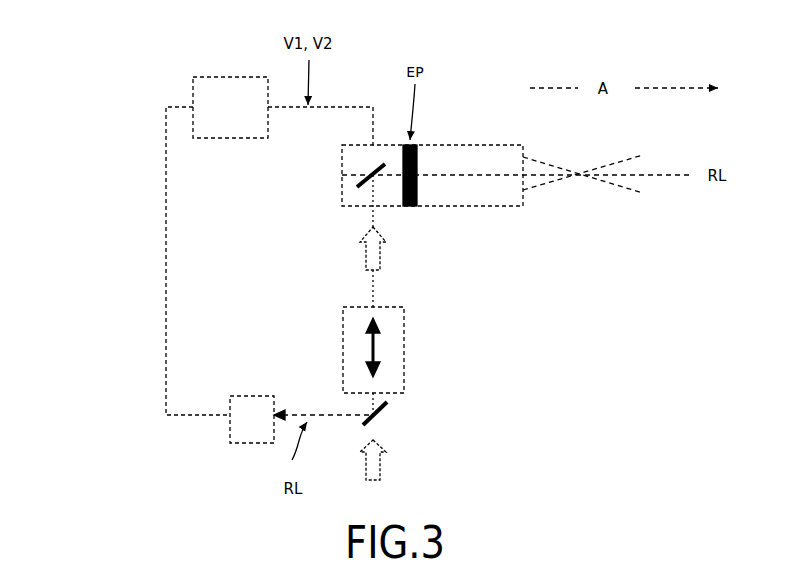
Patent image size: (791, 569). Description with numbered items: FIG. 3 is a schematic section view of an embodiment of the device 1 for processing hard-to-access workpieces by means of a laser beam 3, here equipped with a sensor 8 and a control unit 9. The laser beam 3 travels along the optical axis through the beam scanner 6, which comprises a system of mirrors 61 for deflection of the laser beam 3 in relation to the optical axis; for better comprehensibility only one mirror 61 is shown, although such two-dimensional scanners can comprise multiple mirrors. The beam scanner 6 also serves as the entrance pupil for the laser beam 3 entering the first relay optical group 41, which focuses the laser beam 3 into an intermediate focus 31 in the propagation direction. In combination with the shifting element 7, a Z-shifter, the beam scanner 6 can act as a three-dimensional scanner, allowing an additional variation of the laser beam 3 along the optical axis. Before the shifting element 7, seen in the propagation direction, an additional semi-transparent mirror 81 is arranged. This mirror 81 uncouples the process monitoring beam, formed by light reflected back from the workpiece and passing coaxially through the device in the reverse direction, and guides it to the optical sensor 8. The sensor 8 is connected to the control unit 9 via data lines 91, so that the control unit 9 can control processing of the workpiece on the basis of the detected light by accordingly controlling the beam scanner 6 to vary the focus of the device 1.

The device 1 is at (472, 323).
The laser beam 3 is at (645, 262).
The intermediate focus 31 is at (580, 184).
The first relay optical group 41 is at (462, 140).
The beam scanner 6 is at (332, 194).
The mirror 61 is at (367, 174).
The shifting element 7 is at (340, 345).
The sensor 8 is at (252, 419).
The mirror 81 is at (390, 412).
The control unit 9 is at (230, 107).
The data lines 91 is at (163, 193).